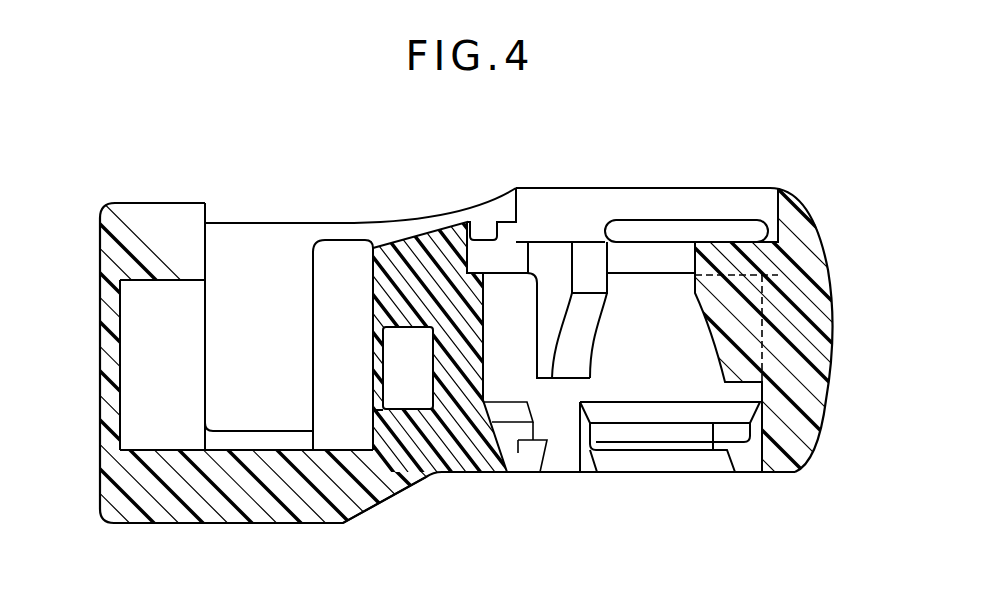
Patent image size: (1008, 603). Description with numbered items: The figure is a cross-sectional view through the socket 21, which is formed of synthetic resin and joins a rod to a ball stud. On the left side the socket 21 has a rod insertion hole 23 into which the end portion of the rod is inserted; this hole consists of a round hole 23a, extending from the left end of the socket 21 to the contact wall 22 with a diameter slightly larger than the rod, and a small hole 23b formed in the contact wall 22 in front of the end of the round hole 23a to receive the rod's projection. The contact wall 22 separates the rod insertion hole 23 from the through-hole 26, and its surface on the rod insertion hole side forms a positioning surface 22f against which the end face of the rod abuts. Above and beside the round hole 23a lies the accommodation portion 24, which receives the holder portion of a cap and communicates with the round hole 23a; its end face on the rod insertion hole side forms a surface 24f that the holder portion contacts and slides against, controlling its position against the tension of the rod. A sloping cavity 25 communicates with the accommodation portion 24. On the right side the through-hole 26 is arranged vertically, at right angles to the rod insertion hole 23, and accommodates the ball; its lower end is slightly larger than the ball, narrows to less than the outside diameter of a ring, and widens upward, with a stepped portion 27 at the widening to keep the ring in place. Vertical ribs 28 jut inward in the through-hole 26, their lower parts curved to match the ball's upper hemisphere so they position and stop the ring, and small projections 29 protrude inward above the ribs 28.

The socket 21 is at (808, 295).
The contact wall 22 is at (412, 273).
The positioning surface 22f is at (370, 287).
The rod insertion hole 23 is at (167, 327).
The round hole 23a is at (143, 413).
The small hole 23b is at (412, 400).
The accommodation portion 24 is at (248, 253).
The surface 24f is at (205, 403).
The cavity 25 is at (200, 213).
The through-hole 26 is at (647, 388).
The stepped portion 27 is at (710, 425).
The vertical ribs 28 is at (590, 265).
The small projections 29 is at (488, 230).